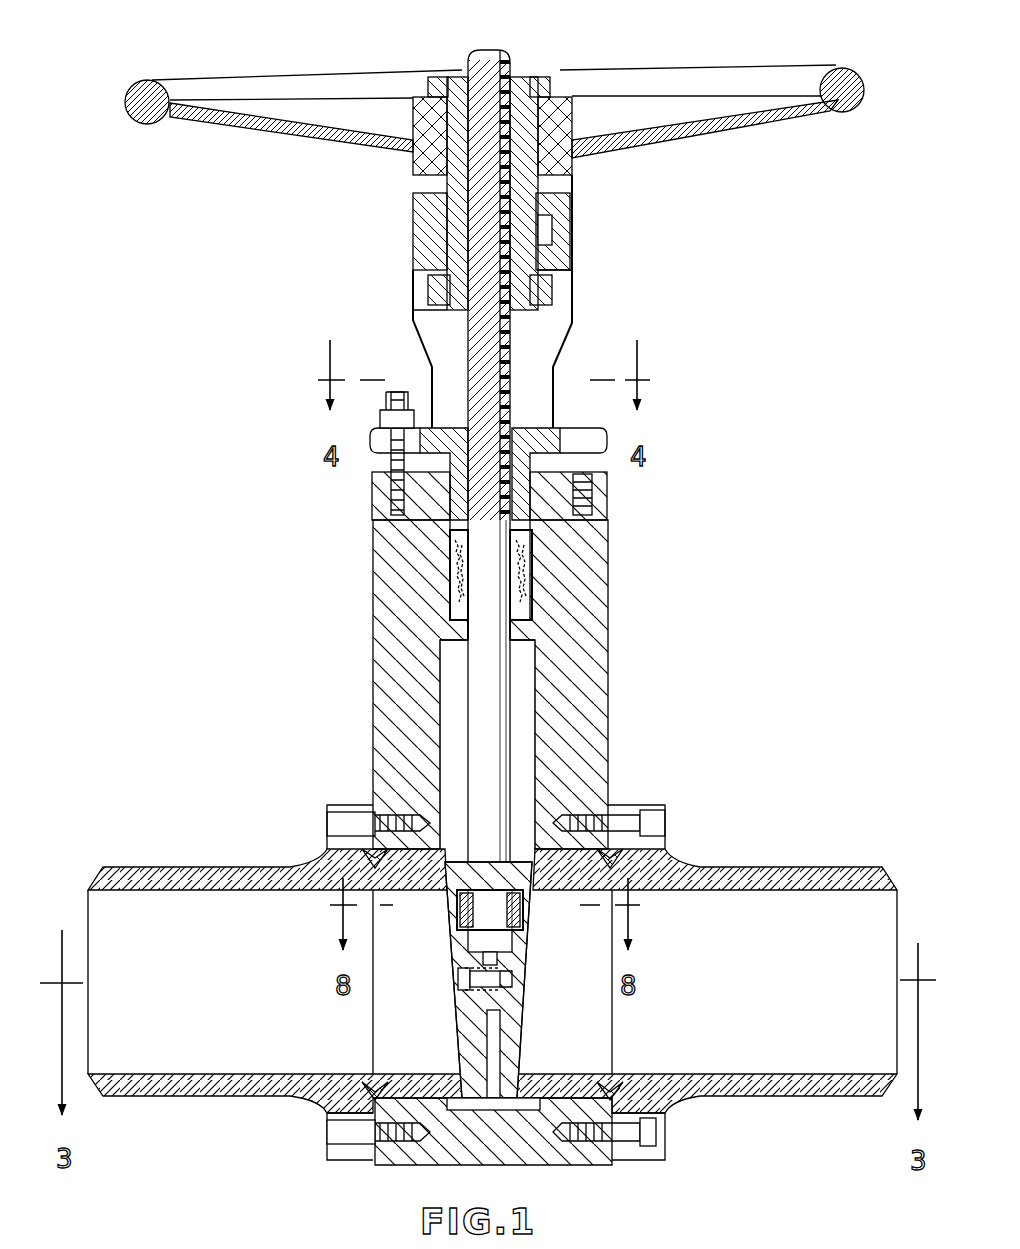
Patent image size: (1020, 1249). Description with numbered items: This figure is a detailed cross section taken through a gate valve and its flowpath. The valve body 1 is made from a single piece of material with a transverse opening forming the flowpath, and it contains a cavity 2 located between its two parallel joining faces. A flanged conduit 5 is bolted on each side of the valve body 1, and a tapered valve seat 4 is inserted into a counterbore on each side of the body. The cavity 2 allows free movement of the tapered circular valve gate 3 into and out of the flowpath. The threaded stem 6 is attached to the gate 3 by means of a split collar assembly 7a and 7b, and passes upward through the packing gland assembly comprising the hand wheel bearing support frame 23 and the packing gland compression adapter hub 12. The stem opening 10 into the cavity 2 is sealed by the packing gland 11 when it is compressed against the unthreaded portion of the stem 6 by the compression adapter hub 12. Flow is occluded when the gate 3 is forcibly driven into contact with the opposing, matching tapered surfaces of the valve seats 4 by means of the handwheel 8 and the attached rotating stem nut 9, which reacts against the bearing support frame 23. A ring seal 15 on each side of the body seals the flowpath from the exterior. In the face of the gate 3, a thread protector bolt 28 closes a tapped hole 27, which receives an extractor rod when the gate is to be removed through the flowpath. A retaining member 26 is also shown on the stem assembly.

The valve body 1 is at (616, 662).
The cavity 2 is at (457, 706).
The tapered circular valve gate 3 is at (447, 948).
The tapered valve seat 4 is at (400, 900).
The flanged conduit 5 is at (247, 866).
The stem 6 is at (519, 782).
The split collar assembly half 7a is at (602, 980).
The split collar assembly half 7b is at (527, 977).
The handwheel 8 is at (753, 130).
The rotating stem nut 9 is at (441, 135).
The stem opening 10 is at (525, 652).
The packing gland 11 is at (528, 582).
The packing gland compression adapter hub 12 is at (537, 420).
The ring seal 15 is at (657, 1118).
The hand wheel bearing support frame 23 is at (575, 287).
The nut 26 is at (574, 206).
The tapped hole 27 is at (509, 998).
The thread protector bolt 28 is at (452, 982).